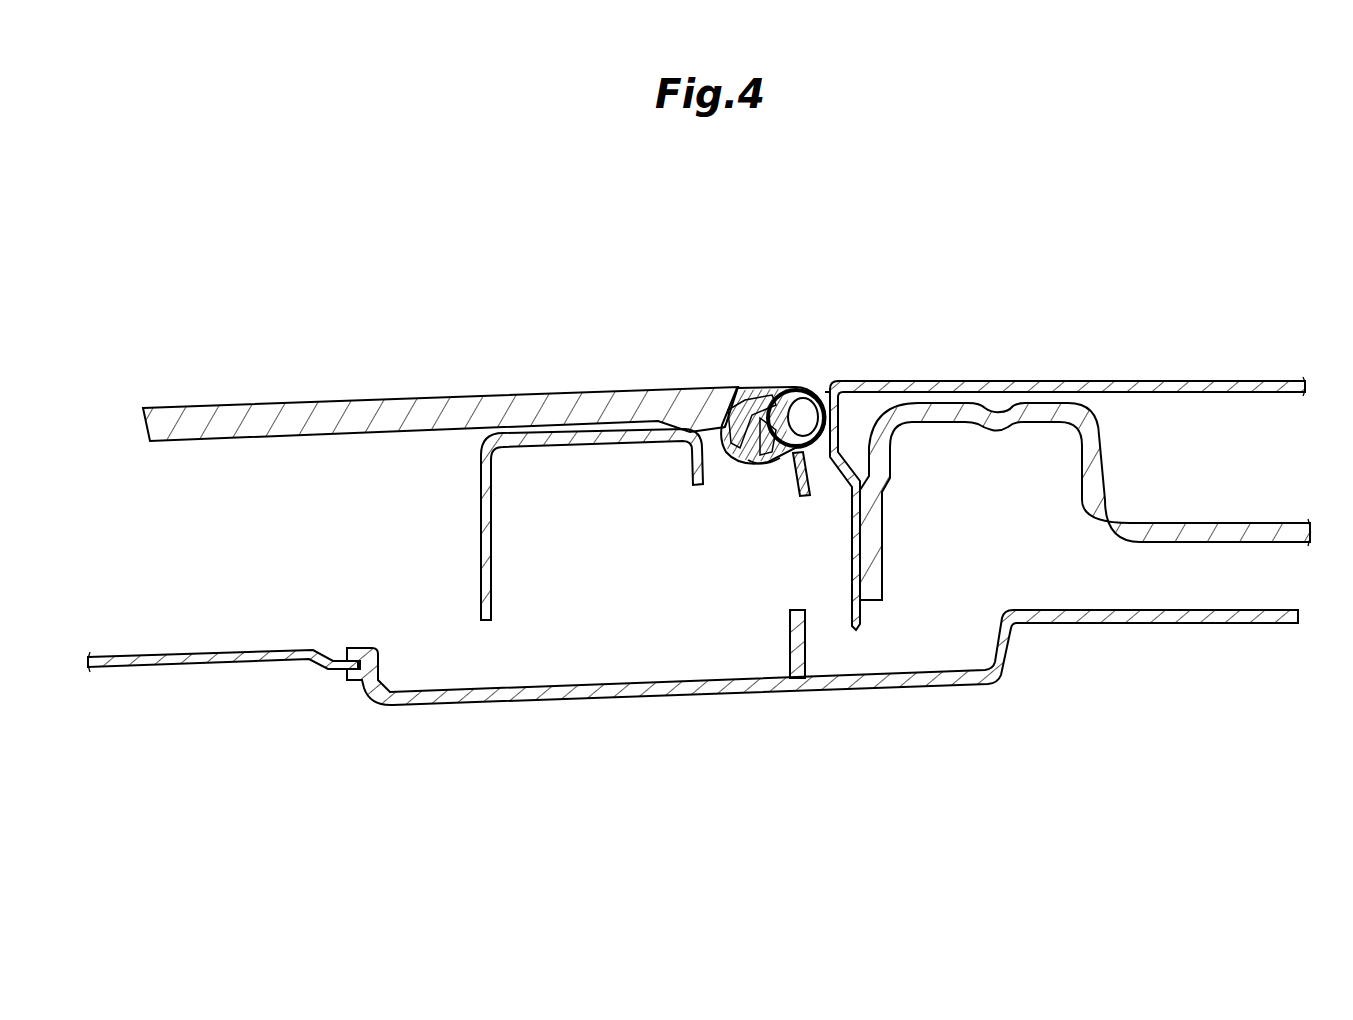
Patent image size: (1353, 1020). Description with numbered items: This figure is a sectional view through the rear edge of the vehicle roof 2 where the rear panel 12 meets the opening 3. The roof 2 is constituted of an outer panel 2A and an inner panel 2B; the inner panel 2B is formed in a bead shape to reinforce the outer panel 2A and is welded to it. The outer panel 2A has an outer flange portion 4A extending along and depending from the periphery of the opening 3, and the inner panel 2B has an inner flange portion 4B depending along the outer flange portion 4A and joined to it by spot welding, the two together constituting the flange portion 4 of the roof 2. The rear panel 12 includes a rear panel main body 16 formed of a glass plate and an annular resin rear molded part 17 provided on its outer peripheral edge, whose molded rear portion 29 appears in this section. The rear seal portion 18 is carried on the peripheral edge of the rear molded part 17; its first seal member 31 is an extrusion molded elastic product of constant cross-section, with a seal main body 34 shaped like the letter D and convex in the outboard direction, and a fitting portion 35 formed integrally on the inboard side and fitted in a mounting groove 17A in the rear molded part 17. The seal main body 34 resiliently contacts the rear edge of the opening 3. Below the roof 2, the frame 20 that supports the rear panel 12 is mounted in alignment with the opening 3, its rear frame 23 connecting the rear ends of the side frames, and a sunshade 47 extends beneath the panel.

The roof 2 is at (1066, 558).
The outer panel 2A is at (1067, 538).
The inner panel 2B is at (1085, 583).
The opening 3 is at (821, 388).
The flange portion 4 is at (934, 768).
The outer flange portion 4A is at (855, 628).
The inner flange portion 4B is at (884, 602).
The rear panel 12 is at (440, 379).
The rear panel main body 16 is at (460, 397).
The rear molded part 17 is at (720, 388).
The mounting groove 17A is at (725, 455).
The rear seal portion 18 is at (789, 376).
The frame 20 is at (822, 700).
The rear frame 23 is at (552, 700).
The molded rear portion 29 is at (600, 478).
The first seal member 31 is at (773, 361).
The seal main body 34 is at (810, 452).
The fitting portion 35 is at (760, 462).
The sunshade 47 is at (217, 668).